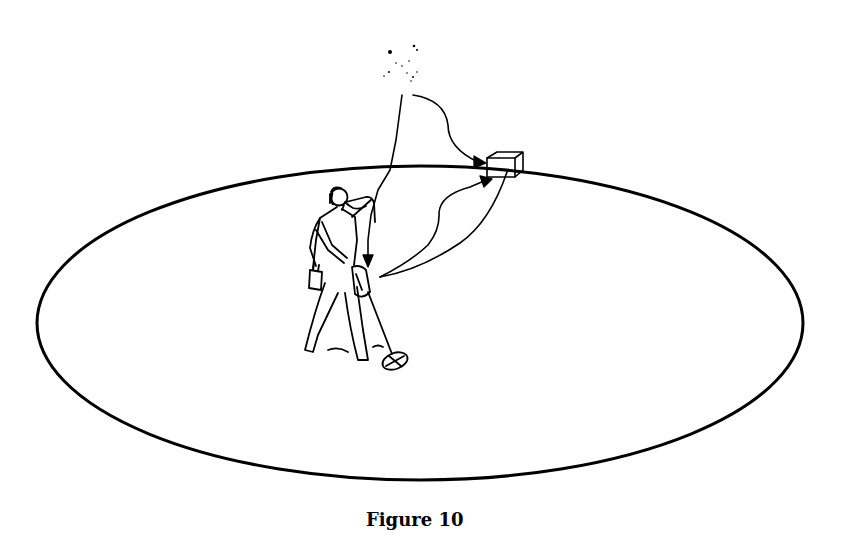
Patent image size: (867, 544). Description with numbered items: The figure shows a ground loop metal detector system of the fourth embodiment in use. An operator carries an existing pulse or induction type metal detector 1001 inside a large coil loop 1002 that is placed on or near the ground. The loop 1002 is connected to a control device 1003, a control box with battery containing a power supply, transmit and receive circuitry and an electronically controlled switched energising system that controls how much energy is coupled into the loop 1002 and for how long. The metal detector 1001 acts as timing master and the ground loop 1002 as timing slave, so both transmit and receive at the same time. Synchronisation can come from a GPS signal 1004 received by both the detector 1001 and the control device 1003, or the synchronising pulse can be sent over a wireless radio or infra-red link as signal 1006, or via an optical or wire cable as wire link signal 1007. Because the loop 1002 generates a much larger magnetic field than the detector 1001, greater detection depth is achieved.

The metal detector 1001 is at (300, 294).
The ground loop coil 1002 is at (127, 208).
The control device 1003 is at (514, 140).
The GPS signal 1004 is at (430, 116).
The wireless link signal 1006 is at (422, 226).
The wire link signal 1007 is at (482, 243).